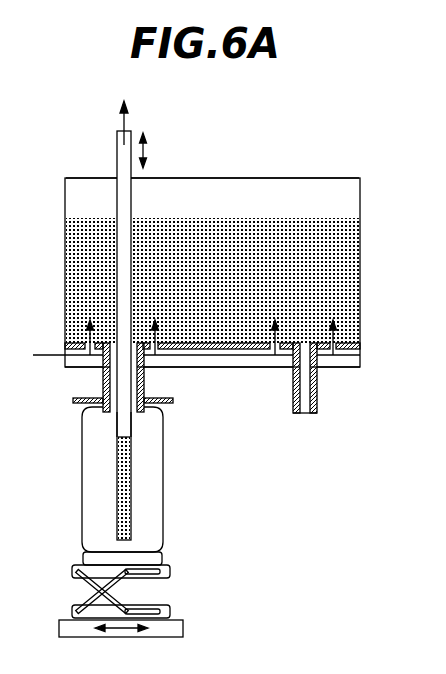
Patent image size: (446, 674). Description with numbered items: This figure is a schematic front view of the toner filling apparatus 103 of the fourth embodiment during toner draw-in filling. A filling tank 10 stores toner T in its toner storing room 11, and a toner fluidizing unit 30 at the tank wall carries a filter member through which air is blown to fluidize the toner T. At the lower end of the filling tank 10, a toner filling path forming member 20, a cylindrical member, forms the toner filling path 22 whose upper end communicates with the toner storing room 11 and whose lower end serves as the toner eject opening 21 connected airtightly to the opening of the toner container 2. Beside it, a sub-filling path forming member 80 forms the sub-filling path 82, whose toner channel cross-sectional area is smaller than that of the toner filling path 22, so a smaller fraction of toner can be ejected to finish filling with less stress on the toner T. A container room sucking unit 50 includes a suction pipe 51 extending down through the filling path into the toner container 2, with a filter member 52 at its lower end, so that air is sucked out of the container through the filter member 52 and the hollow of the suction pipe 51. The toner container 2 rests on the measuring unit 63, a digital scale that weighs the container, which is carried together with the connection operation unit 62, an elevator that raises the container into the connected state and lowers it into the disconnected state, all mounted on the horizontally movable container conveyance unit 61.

The toner filling apparatus 103 is at (222, 357).
The filling tank 10 is at (222, 254).
The toner storing room 11 is at (318, 190).
The toner T is at (78, 245).
The toner fluidizing unit 30 is at (78, 355).
The toner filling path forming member 20 is at (143, 373).
The toner eject opening 21 is at (113, 413).
The toner filling path 22 is at (113, 380).
The toner container 2 is at (165, 478).
The container room sucking unit 50 is at (138, 433).
The suction pipe 51 is at (123, 422).
The filter member 52 is at (120, 503).
The sub-filling path forming member 80 is at (313, 375).
The sub-filling path 82 is at (310, 405).
The measuring unit 63 is at (150, 560).
The connection operation unit 62 is at (172, 612).
The container conveyance unit 61 is at (183, 630).